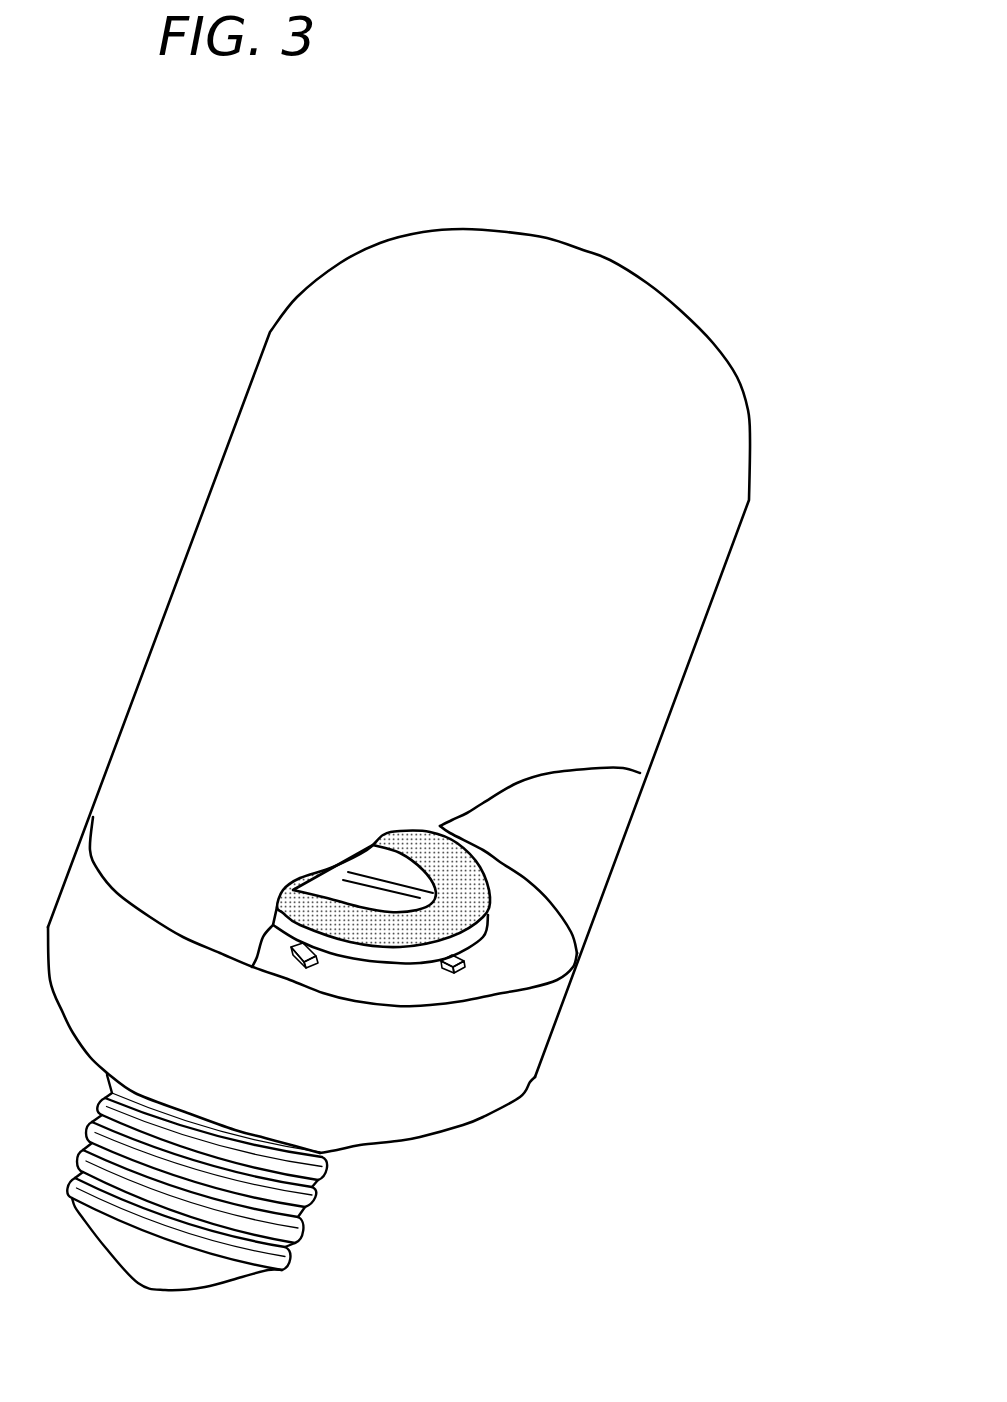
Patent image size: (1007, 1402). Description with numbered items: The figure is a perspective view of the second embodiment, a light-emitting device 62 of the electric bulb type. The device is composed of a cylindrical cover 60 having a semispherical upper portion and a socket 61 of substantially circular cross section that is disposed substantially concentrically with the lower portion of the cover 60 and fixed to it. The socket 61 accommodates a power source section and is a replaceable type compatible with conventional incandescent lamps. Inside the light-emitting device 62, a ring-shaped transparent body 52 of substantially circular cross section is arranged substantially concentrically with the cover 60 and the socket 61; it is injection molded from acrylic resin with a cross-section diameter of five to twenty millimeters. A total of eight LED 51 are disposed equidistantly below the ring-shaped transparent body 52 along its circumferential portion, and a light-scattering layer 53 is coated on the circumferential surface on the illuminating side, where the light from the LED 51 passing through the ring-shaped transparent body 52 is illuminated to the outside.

The cover 60 is at (612, 258).
The light-emitting device 62 is at (180, 477).
The socket 61 is at (307, 1217).
The light-scattering layer 53 is at (453, 873).
The ring-shaped transparent body 52 is at (488, 914).
The LED 51 is at (457, 968).